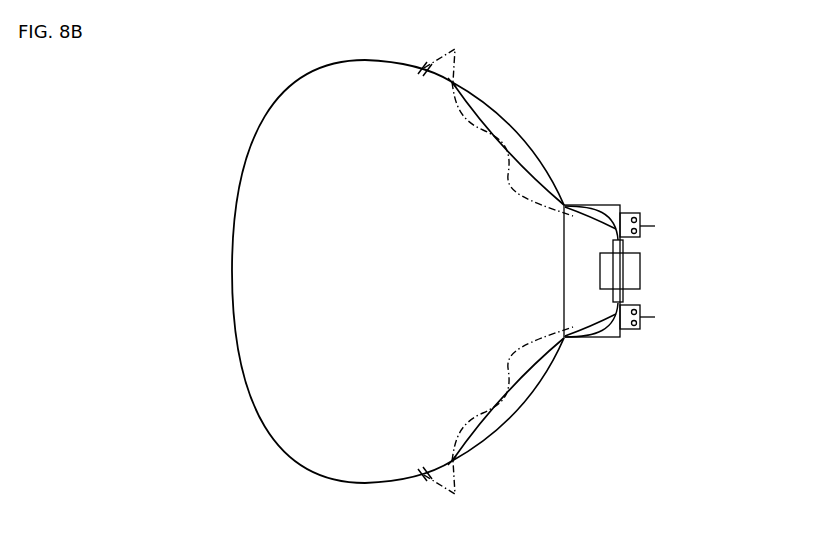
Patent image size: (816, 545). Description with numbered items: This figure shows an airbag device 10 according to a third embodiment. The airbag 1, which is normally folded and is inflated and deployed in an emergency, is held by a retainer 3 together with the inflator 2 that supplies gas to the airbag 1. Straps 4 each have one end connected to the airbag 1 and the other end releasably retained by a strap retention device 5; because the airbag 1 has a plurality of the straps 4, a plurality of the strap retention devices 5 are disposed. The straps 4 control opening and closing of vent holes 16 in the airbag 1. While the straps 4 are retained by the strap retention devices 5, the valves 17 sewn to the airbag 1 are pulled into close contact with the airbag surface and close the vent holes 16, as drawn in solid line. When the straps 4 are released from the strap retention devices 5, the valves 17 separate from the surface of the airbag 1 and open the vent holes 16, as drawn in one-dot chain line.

The airbag 1 is at (356, 60).
The inflator 2 is at (642, 270).
The retainer 3 is at (609, 205).
The strap 4 is at (493, 137).
The strap retention device 5 is at (641, 214).
The airbag device 10 is at (621, 127).
The vent hole 16 is at (436, 79).
The valve 17 is at (455, 80).